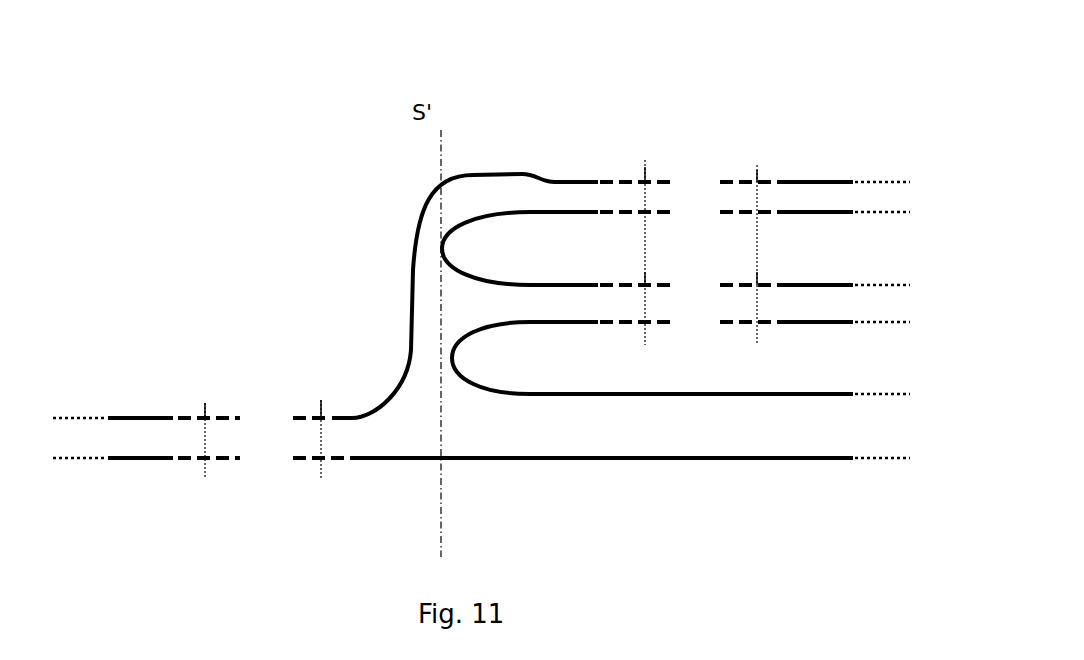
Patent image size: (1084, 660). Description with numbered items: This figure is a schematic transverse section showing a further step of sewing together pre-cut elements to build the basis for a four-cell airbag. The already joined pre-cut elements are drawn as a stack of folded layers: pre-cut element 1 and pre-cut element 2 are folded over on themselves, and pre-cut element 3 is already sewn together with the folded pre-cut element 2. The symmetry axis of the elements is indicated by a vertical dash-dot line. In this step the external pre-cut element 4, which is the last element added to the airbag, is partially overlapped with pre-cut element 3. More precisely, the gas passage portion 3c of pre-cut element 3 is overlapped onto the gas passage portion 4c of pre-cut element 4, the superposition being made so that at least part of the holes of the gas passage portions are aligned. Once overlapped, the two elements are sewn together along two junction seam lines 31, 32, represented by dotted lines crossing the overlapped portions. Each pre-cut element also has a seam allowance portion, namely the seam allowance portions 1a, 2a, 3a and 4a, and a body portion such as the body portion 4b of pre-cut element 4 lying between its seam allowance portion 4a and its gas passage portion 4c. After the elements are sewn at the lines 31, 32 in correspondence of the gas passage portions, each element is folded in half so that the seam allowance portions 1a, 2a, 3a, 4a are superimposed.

The pre-cut element 1 is at (699, 355).
The seam allowance portion 1a is at (815, 358).
The pre-cut element 2 is at (694, 243).
The seam allowance portion 2a is at (815, 248).
The pre-cut element 3 is at (500, 272).
The seam allowance portion 3a is at (481, 272).
The gas passage portion 3c is at (292, 390).
The pre-cut element 4 is at (500, 477).
The seam allowance portion 4a is at (481, 484).
The body portion 4b is at (601, 484).
The gas passage portion 4c is at (302, 484).
The junction seam line 31 is at (205, 403).
The junction seam line 32 is at (322, 407).